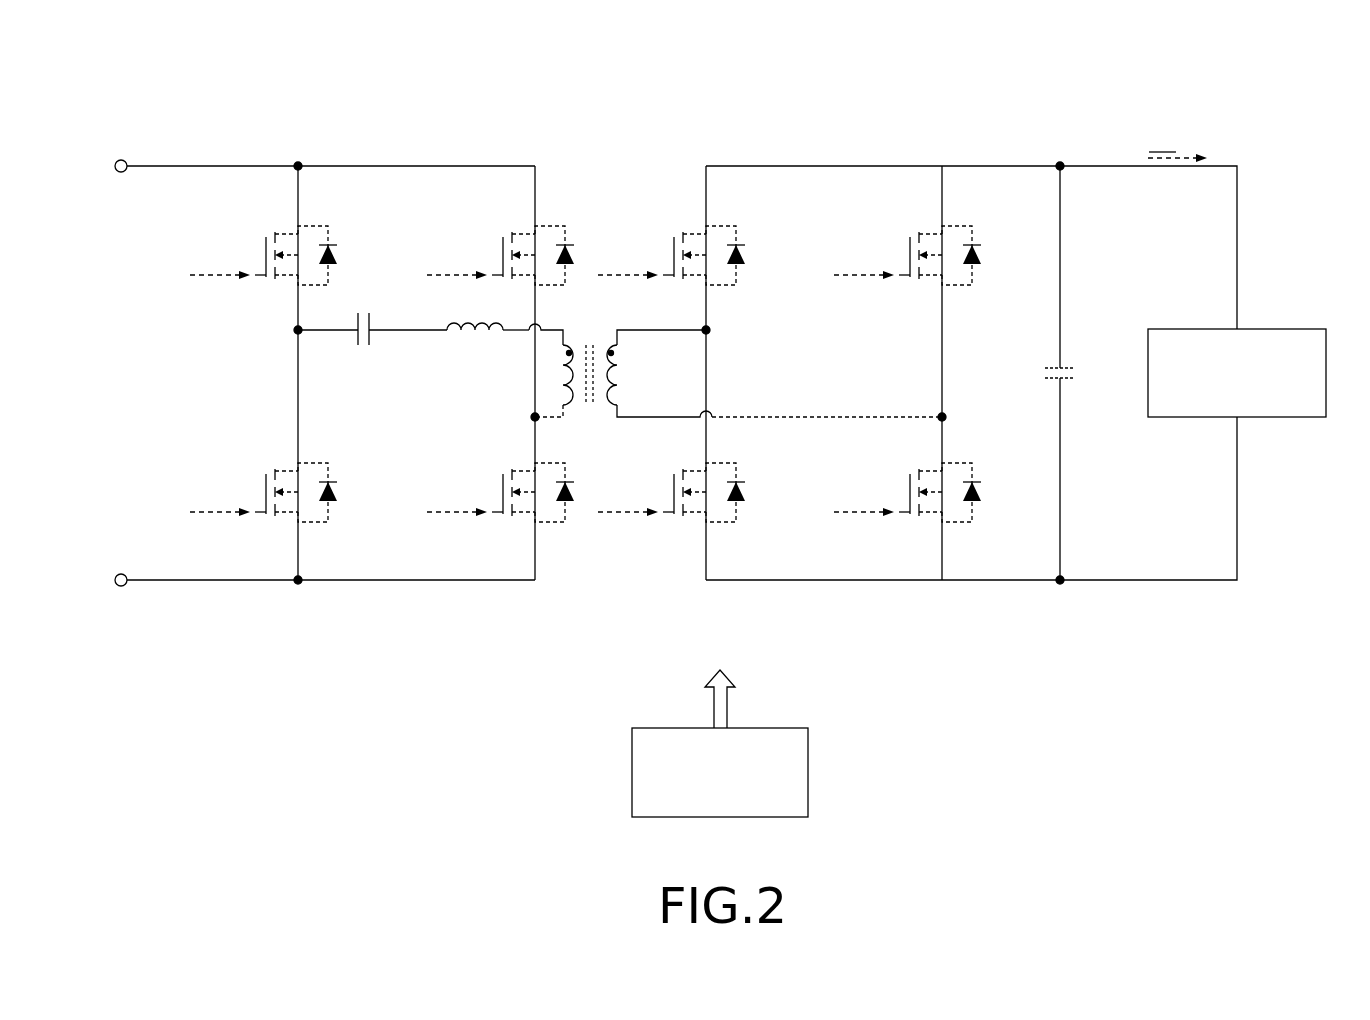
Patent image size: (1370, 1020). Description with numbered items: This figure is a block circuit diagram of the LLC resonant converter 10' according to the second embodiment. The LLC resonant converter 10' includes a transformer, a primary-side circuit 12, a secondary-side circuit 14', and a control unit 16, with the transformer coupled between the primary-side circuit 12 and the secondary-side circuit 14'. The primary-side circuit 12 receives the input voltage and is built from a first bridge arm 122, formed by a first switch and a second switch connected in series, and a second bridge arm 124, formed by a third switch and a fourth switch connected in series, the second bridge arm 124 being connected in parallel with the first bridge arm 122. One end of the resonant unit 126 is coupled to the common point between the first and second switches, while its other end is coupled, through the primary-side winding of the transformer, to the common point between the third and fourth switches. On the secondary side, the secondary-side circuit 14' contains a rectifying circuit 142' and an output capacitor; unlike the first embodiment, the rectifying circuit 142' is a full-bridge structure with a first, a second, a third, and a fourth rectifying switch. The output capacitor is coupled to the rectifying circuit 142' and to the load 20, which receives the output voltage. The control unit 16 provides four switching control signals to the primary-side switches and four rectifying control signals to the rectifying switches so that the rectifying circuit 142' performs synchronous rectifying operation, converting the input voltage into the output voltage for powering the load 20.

The LLC resonant converter 10' is at (722, 418).
The primary-side circuit 12 is at (386, 150).
The first bridge arm 122 is at (298, 590).
The second bridge arm 124 is at (535, 592).
The resonant unit 126 is at (455, 340).
The secondary-side circuit 14' is at (917, 333).
The rectifying circuit 142' is at (789, 331).
The control unit 16 is at (750, 735).
The load 20 is at (1250, 335).